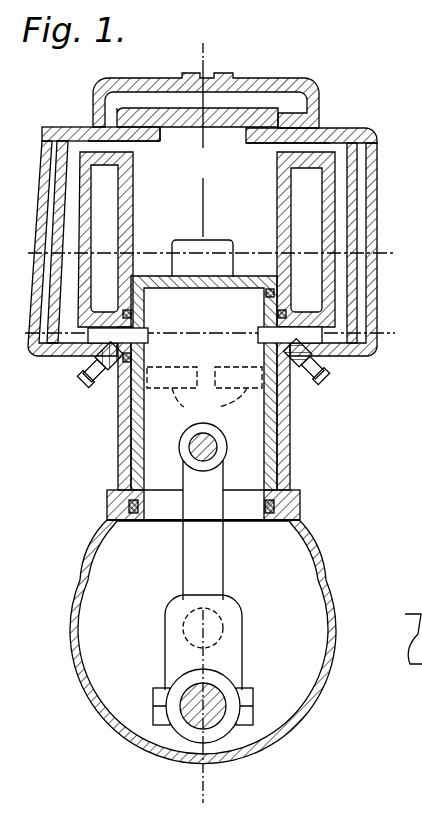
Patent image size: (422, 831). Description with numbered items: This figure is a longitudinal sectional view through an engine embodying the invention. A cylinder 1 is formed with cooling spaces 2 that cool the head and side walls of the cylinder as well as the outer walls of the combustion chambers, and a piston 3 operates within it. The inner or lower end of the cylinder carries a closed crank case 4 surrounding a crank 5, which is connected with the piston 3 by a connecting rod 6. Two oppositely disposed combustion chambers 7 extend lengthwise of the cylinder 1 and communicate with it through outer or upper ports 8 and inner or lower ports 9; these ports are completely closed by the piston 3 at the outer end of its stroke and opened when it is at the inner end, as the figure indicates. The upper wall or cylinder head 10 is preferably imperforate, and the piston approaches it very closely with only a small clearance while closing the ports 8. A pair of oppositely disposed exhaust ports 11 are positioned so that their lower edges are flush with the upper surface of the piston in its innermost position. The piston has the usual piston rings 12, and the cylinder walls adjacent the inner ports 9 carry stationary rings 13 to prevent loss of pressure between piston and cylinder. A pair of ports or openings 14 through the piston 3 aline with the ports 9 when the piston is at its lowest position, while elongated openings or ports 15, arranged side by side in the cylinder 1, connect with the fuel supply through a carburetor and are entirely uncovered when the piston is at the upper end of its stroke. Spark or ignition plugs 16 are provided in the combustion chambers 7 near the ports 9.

The cylinder 1 is at (312, 88).
The cooling spaces 2 is at (384, 163).
The piston 3 is at (22, 326).
The crank case 4 is at (22, 246).
The crank 5 is at (237, 639).
The connecting rod 6 is at (197, 555).
The combustion chambers 7 is at (340, 232).
The outer or upper ports 8 is at (150, 143).
The inner or lower ports 9 is at (105, 334).
The cylinder head 10 is at (211, 135).
The exhaust ports 11 is at (207, 252).
The piston rings 12 is at (268, 292).
The stationary rings 13 is at (142, 309).
The ports or openings 14 is at (258, 328).
The elongated openings or ports 15 is at (204, 394).
The spark or ignition plugs 16 is at (100, 388).